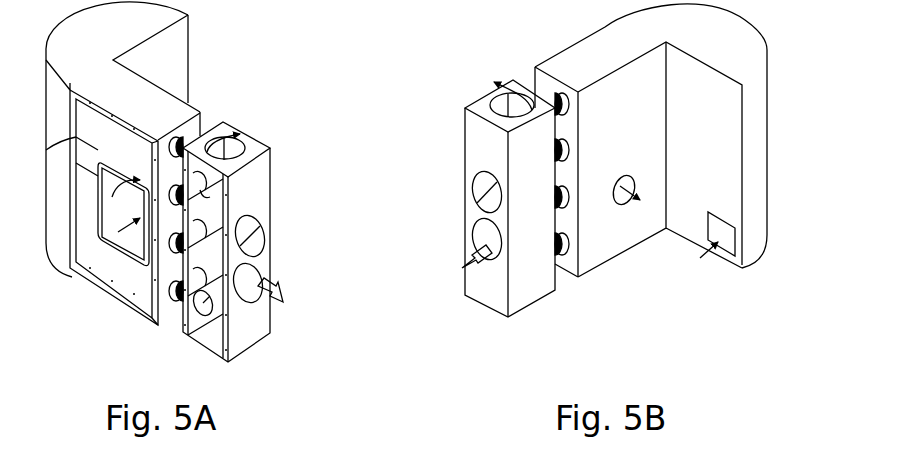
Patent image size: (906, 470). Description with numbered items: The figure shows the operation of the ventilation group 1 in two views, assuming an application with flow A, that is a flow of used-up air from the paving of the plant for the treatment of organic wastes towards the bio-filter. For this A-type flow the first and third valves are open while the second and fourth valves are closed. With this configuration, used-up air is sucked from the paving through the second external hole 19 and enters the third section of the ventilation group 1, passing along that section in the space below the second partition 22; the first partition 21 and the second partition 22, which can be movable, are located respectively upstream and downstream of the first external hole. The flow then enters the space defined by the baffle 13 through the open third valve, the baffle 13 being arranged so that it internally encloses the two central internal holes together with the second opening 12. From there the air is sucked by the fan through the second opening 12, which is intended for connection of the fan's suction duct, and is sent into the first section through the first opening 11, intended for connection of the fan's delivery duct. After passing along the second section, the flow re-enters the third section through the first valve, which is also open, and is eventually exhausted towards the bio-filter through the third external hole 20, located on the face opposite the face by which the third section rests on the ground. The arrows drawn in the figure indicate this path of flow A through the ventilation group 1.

In FIG. 5A, the housing / heating apparatus 1 is at (278, 82).
In FIG. 5B, the housing / heating apparatus 1 is at (468, 80).
In FIG. 5B, the first opening 11 is at (738, 238).
In FIG. 5B, the second opening 12 is at (625, 200).
In FIG. 5A, the baffle 13 is at (126, 238).
In FIG. 5A, the second external hole 19 is at (256, 272).
In FIG. 5B, the second external hole 19 is at (490, 237).
In FIG. 5A, the third external hole 20 is at (212, 150).
In FIG. 5B, the third external hole 20 is at (527, 90).
In FIG. 5A, the first partition 21 is at (205, 197).
In FIG. 5A, the second partition 22 is at (203, 245).
In FIG. 5A, the flow A is at (240, 242).
In FIG. 5B, the flow A is at (497, 198).